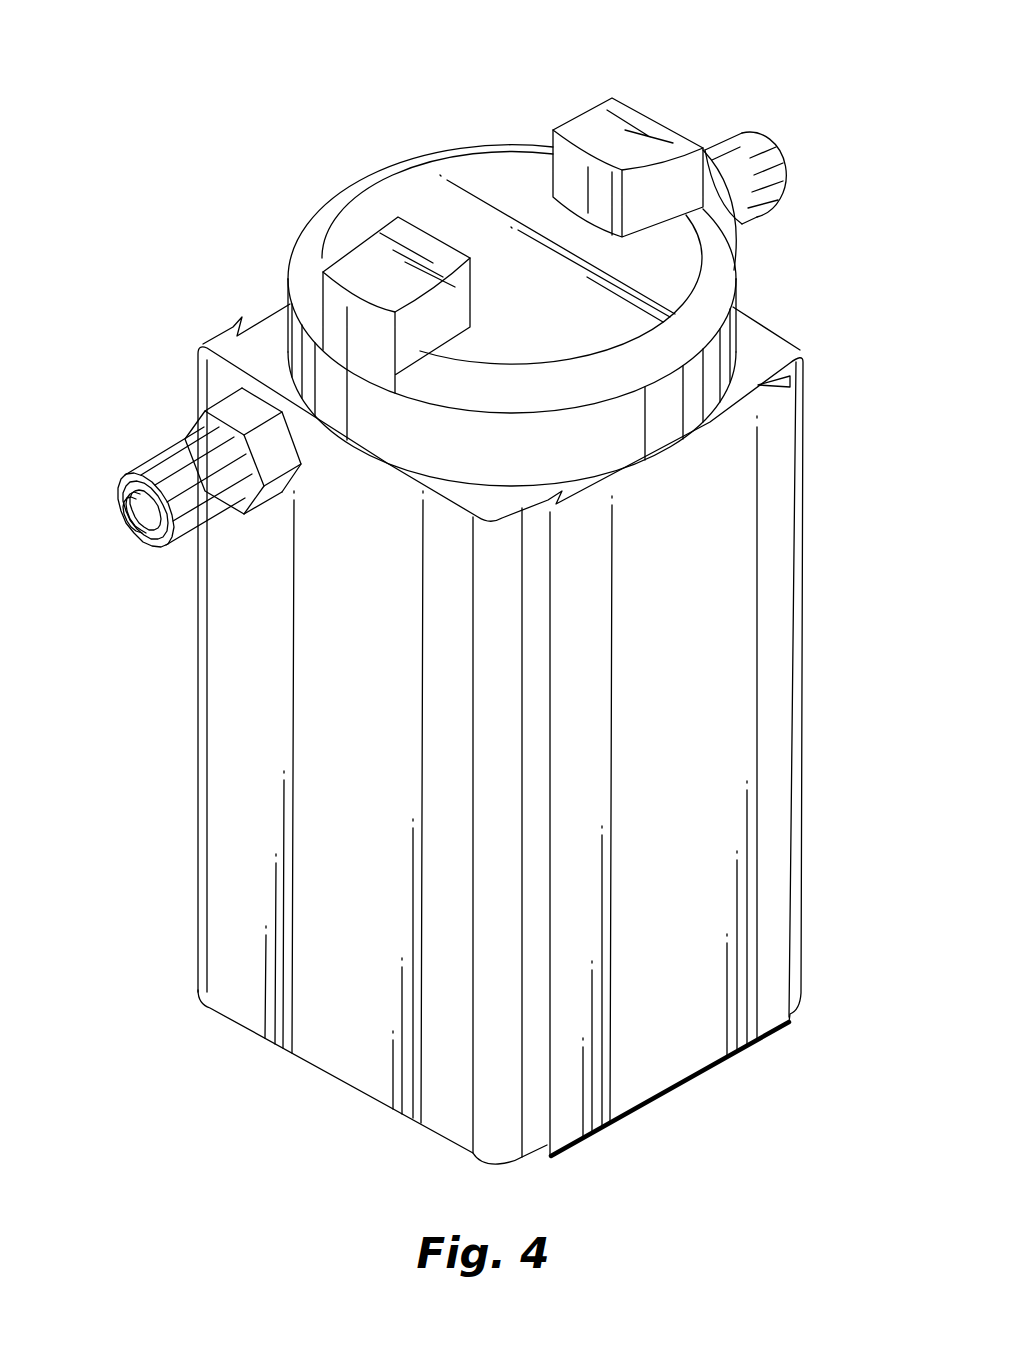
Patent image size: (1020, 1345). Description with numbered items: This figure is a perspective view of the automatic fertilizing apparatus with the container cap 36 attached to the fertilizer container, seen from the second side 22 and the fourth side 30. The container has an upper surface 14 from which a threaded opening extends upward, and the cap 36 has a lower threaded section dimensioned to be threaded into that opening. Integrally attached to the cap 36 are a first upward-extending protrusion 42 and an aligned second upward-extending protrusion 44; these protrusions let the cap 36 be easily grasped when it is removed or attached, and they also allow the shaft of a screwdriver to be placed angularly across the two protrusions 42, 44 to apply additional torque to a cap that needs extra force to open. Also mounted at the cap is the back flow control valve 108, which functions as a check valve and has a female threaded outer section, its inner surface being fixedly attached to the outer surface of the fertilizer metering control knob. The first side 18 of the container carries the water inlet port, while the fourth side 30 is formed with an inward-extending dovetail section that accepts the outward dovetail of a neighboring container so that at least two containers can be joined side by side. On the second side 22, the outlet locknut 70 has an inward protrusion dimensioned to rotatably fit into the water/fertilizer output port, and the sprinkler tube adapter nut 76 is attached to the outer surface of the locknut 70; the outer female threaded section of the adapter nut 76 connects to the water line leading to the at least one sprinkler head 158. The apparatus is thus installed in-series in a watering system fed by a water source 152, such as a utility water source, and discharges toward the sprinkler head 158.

The upper surface 14 is at (458, 722).
The first side 18 is at (722, 477).
The second side 22 is at (318, 660).
The fourth side 30 is at (678, 686).
The container cap 36 is at (488, 268).
The first upward-extending protrusion 42 is at (657, 123).
The second upward-extending protrusion 44 is at (340, 280).
The outlet locknut 70 is at (242, 395).
The sprinkler tube adapter nut 76 is at (133, 484).
The back flow control valve 108 is at (732, 237).
The water source 152 is at (783, 153).
The sprinkler head 158 is at (99, 537).